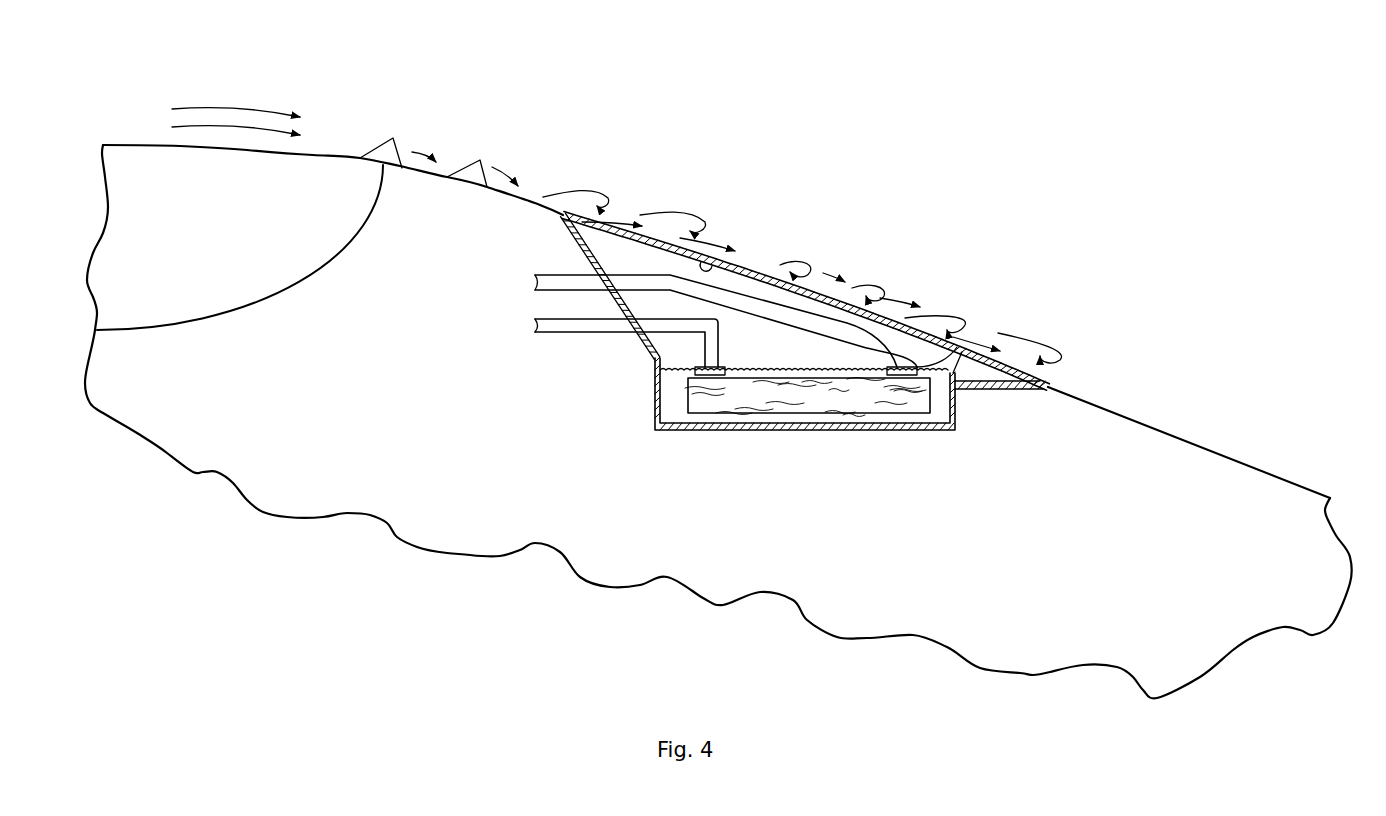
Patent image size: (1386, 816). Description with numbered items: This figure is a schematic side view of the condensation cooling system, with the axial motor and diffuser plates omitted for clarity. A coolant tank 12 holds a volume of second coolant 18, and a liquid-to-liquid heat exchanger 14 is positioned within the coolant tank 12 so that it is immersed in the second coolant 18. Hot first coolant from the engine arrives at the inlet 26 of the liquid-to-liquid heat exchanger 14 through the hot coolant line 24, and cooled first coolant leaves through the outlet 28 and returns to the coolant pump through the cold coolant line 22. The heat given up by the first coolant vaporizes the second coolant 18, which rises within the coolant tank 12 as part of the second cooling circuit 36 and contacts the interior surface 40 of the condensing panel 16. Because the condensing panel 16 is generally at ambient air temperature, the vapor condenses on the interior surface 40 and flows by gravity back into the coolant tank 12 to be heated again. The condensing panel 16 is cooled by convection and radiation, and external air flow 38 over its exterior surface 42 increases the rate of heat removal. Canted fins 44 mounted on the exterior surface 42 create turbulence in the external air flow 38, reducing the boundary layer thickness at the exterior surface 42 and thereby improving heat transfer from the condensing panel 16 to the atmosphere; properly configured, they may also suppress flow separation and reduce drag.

The coolant tank 12 is at (913, 431).
The liquid-to-liquid heat exchanger 14 is at (767, 418).
The condensing panel 16 is at (766, 270).
The second coolant 18 is at (940, 392).
The cold coolant line 22 is at (553, 273).
The hot coolant line 24 is at (588, 335).
The inlet 26 is at (693, 374).
The outlet 28 is at (958, 342).
The second cooling circuit 36 is at (898, 178).
The external air flow 38 is at (233, 109).
The interior surface 40 is at (709, 258).
The exterior surface 42 is at (850, 307).
The canted fins 44 is at (393, 138).